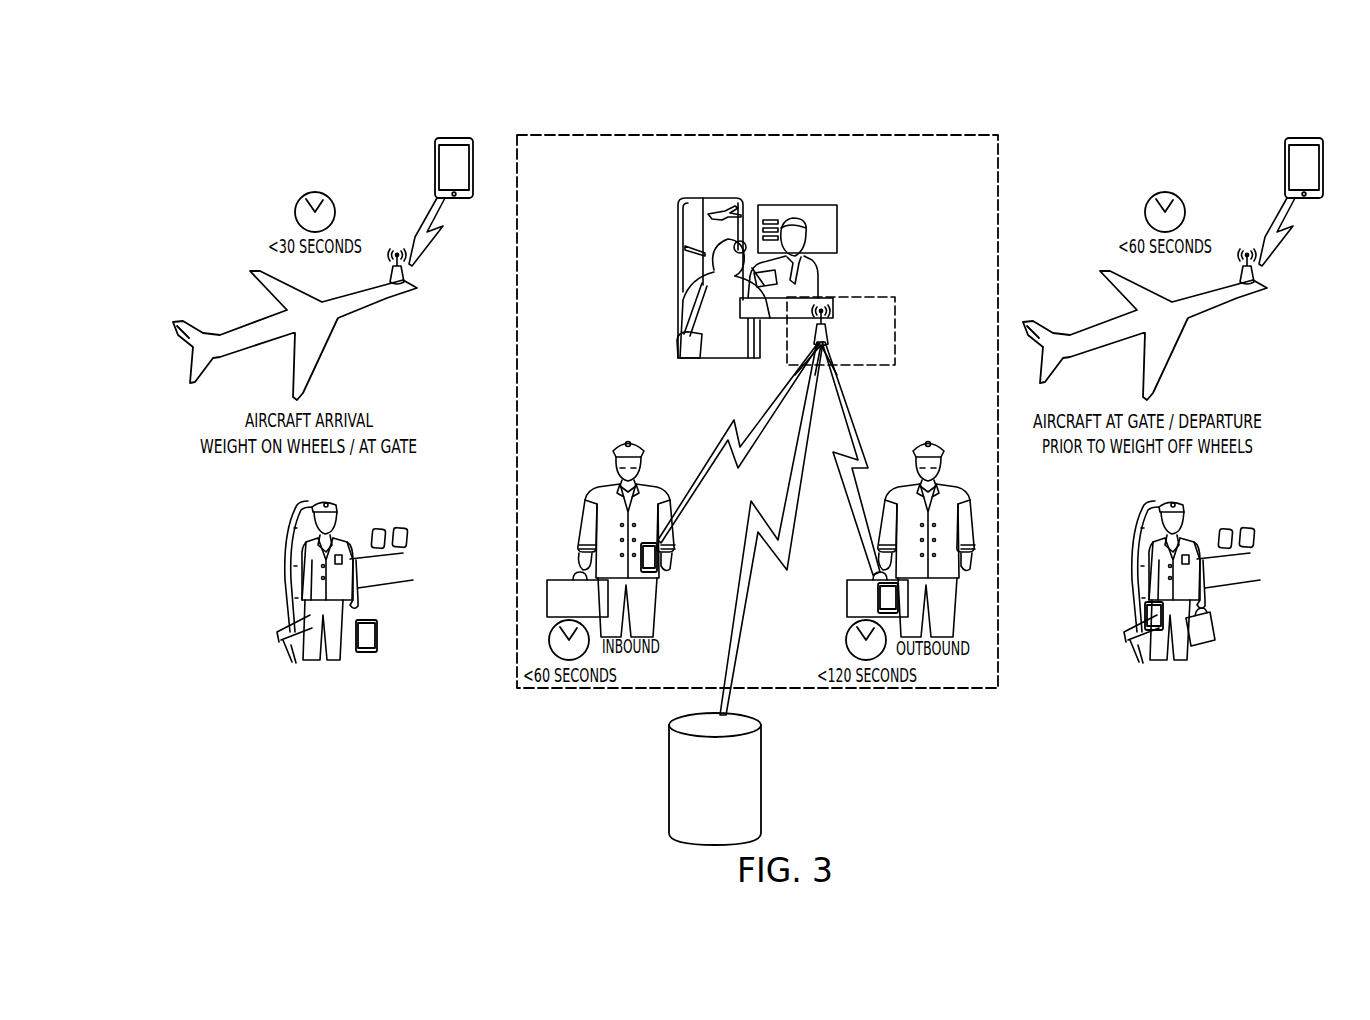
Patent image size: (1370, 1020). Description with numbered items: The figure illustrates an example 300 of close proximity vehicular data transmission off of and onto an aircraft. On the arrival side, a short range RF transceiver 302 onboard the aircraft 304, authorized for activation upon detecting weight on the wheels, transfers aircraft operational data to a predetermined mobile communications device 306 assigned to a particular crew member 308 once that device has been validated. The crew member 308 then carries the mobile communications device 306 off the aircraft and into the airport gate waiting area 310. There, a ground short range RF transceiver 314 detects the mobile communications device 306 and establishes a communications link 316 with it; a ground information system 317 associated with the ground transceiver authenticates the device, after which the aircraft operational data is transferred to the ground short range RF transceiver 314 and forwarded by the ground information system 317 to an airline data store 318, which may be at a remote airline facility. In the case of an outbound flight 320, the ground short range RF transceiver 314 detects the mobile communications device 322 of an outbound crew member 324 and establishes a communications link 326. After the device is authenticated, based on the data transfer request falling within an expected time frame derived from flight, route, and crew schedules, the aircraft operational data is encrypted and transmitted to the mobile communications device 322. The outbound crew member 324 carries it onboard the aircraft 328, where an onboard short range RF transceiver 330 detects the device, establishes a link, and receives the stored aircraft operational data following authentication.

The example of close proximity vehicular data transmission 300 is at (303, 146).
The short range RF transceiver 302 is at (403, 290).
The aircraft 304 is at (246, 323).
The mobile communications device 306 is at (455, 138).
The crew member 308 is at (355, 521).
The airport gate waiting area 310 is at (840, 133).
The ground short range RF transceiver 314 is at (827, 336).
The communications link 316 is at (728, 426).
The ground information system 317 is at (860, 296).
The airline data store 318 is at (762, 790).
The outbound flight 320 is at (957, 689).
The mobile communications device 322 is at (1305, 138).
The outbound crew member 324 is at (1205, 518).
The communications link 326 is at (850, 406).
The aircraft 328 is at (1096, 323).
The onboard short range RF transceiver 330 is at (1253, 290).